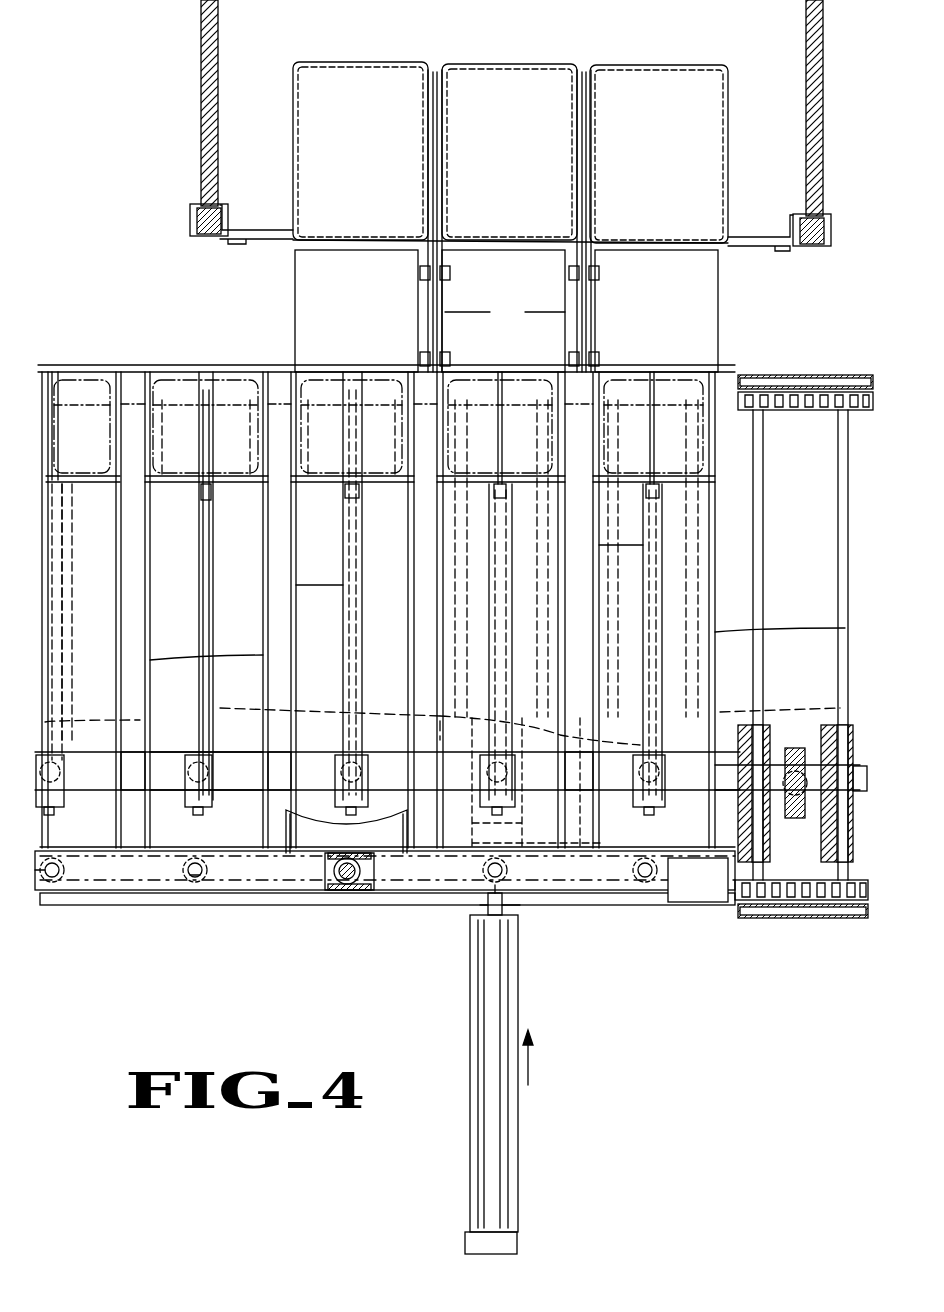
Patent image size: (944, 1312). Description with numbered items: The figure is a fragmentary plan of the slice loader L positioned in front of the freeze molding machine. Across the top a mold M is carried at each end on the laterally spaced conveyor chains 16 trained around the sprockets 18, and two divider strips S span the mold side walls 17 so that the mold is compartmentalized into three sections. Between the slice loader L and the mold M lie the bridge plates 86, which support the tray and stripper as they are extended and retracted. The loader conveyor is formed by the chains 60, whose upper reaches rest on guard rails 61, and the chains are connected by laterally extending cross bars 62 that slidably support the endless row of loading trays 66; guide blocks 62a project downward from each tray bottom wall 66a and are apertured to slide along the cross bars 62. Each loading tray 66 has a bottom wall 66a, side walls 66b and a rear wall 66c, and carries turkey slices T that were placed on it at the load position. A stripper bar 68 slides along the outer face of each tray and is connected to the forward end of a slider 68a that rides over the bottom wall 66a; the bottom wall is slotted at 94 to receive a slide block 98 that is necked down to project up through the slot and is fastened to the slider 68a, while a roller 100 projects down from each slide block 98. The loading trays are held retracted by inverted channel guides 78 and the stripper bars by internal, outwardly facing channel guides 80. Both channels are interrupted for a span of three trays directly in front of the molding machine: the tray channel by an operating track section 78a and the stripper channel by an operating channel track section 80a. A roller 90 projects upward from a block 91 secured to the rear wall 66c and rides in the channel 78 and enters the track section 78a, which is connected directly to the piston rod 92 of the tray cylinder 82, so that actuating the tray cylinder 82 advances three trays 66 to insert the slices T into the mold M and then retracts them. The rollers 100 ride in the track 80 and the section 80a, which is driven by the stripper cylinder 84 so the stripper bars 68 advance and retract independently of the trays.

The conveyor chains 16 is at (190, 215).
The mold side walls 17 is at (498, 75).
The sprockets 18 is at (200, 85).
The chains 60 is at (780, 392).
The guard rails 61 is at (830, 392).
The cross bars 62 is at (620, 660).
The guide blocks 62a is at (440, 718).
The loading tray 66 is at (178, 602).
The bottom wall 66a is at (338, 687).
The side walls 66b is at (208, 660).
The rear wall 66c is at (105, 848).
The stripper bar 68 is at (318, 482).
The slider 68a is at (63, 568).
The inverted channel guides 78 is at (104, 890).
The operating track section 78a is at (405, 882).
The channel guides 80 is at (270, 790).
The operating channel track section 80a is at (396, 800).
The tray cylinder 82 is at (580, 1108).
The stripper cylinder 84 is at (478, 902).
The bridge plate 86 is at (362, 286).
The roller 90 is at (210, 888).
The block 91 is at (72, 895).
The piston rod 92 is at (505, 898).
The tray slot 94 is at (205, 380).
The slide block 98 is at (540, 750).
The roller 100 is at (64, 772).
The molds M is at (702, 58).
The turkey slices T is at (100, 348).
The divider strips S is at (505, 313).
The slice loader L is at (178, 918).